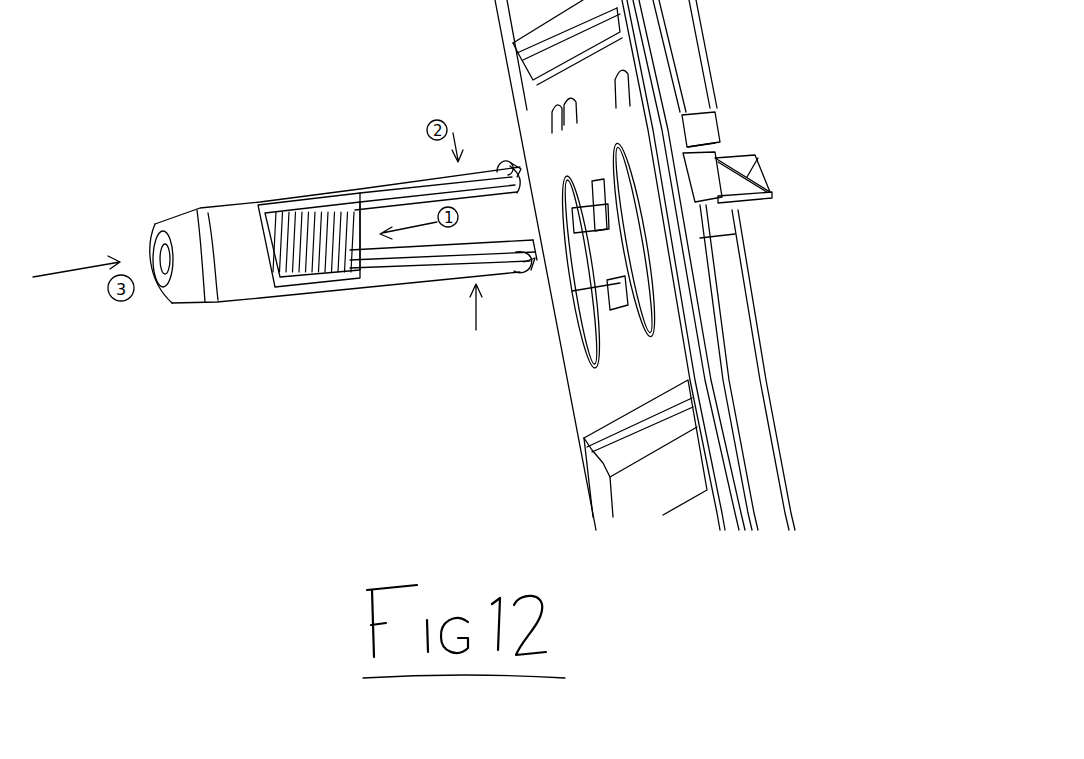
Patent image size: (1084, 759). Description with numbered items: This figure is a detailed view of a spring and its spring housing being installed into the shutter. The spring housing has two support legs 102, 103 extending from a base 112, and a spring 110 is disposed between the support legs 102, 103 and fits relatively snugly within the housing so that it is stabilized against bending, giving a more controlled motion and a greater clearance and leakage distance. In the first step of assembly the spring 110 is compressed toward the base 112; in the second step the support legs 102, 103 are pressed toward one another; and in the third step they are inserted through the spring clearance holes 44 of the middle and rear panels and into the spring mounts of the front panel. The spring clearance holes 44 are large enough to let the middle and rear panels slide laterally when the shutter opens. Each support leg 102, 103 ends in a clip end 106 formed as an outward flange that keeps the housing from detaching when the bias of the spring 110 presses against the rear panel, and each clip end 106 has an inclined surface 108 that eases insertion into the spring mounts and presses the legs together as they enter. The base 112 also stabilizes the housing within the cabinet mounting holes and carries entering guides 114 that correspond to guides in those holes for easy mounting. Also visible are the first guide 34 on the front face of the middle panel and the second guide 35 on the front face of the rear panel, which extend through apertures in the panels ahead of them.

The first guide 34 is at (770, 192).
The second guide 35 is at (755, 156).
The spring clearance hole 44 is at (650, 307).
The support leg 102 is at (413, 180).
The support leg 103 is at (427, 290).
The clip end 106 is at (528, 250).
The inclined surface 108 is at (503, 160).
The spring 110 is at (332, 235).
The base 112 is at (206, 312).
The entering guide 114 is at (190, 235).